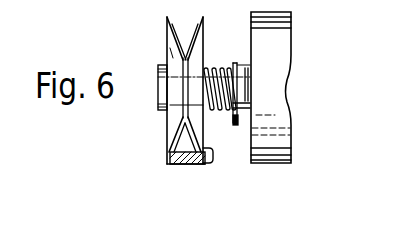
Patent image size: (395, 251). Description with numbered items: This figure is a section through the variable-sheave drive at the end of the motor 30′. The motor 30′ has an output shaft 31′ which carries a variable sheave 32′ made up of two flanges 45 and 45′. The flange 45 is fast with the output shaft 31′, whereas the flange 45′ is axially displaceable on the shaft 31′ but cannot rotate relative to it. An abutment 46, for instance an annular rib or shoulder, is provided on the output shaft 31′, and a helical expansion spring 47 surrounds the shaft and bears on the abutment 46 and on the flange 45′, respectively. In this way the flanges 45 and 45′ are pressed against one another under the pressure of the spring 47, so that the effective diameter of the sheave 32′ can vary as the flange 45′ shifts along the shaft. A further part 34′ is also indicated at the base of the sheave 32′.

The motor 30′ is at (268, 126).
The output shaft 31′ is at (245, 68).
The variable sheave 32′ is at (160, 135).
The hub block 34′ is at (170, 166).
The flange 45 is at (167, 42).
The flange 45′ is at (206, 168).
The abutment 46 is at (218, 112).
The helical expansion spring 47 is at (208, 160).